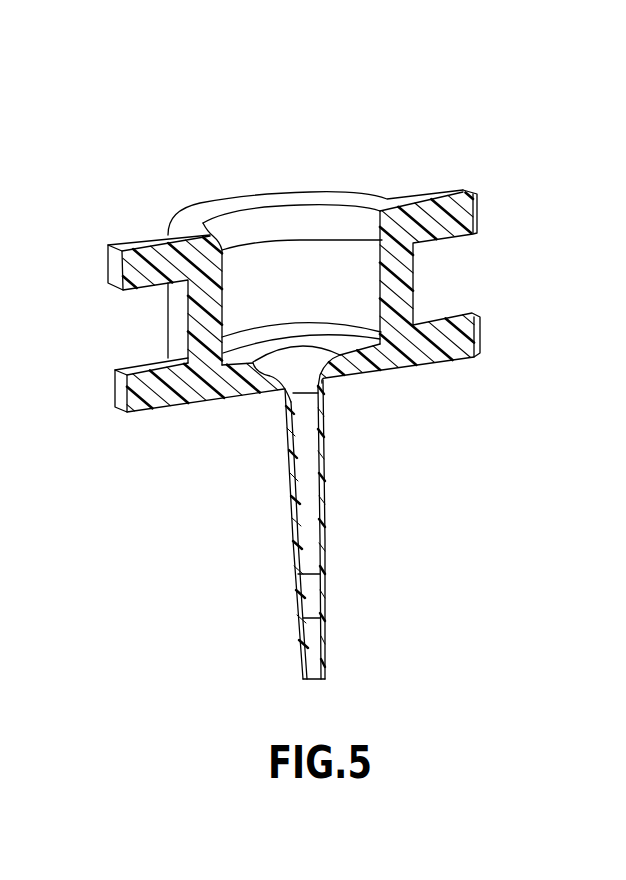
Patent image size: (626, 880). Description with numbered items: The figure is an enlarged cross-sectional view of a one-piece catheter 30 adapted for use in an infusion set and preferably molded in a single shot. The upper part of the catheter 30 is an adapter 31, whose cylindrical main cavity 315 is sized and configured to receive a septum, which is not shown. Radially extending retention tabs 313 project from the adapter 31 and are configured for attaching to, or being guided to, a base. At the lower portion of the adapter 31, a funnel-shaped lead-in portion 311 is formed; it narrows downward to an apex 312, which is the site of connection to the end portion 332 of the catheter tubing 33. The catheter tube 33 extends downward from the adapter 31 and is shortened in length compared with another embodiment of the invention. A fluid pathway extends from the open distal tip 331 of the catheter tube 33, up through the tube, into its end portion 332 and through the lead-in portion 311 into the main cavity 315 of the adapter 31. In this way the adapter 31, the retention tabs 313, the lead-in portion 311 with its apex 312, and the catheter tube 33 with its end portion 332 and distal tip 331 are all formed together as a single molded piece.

The catheter 30 is at (551, 166).
The adapter 31 is at (337, 200).
The retention tabs 313 is at (450, 192).
The cylindrical main cavity 315 is at (260, 272).
The funnel-shaped lead-in portion 311 is at (282, 392).
The apex 312 is at (285, 398).
The catheter tube 33 is at (326, 508).
The end portion 332 is at (324, 423).
The open distal tip 331 is at (326, 630).